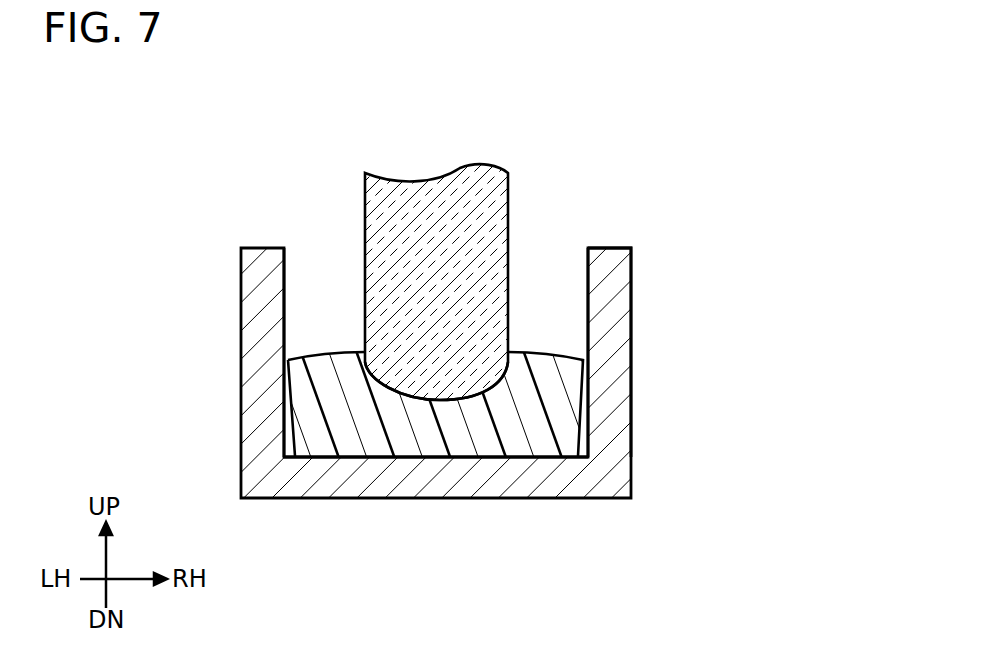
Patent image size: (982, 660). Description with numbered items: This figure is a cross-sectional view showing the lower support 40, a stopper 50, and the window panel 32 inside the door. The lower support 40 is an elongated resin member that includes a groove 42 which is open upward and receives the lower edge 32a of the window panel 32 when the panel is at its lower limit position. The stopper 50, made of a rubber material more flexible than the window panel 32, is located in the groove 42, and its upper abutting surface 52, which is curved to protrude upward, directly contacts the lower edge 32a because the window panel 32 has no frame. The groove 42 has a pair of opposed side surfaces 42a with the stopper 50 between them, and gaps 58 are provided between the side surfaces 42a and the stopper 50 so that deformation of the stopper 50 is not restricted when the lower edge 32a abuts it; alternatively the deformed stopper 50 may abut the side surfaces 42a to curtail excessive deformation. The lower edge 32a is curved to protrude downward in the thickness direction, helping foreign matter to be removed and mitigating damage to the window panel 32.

The window panel 32 is at (432, 210).
The lower edge of the window panel 32a is at (433, 402).
The lower support 40 is at (257, 414).
The groove 42 is at (534, 263).
The side surfaces of the groove 42a is at (284, 297).
The stopper 50 is at (412, 437).
The abutting surface 52 is at (536, 352).
The gap 58 is at (294, 452).